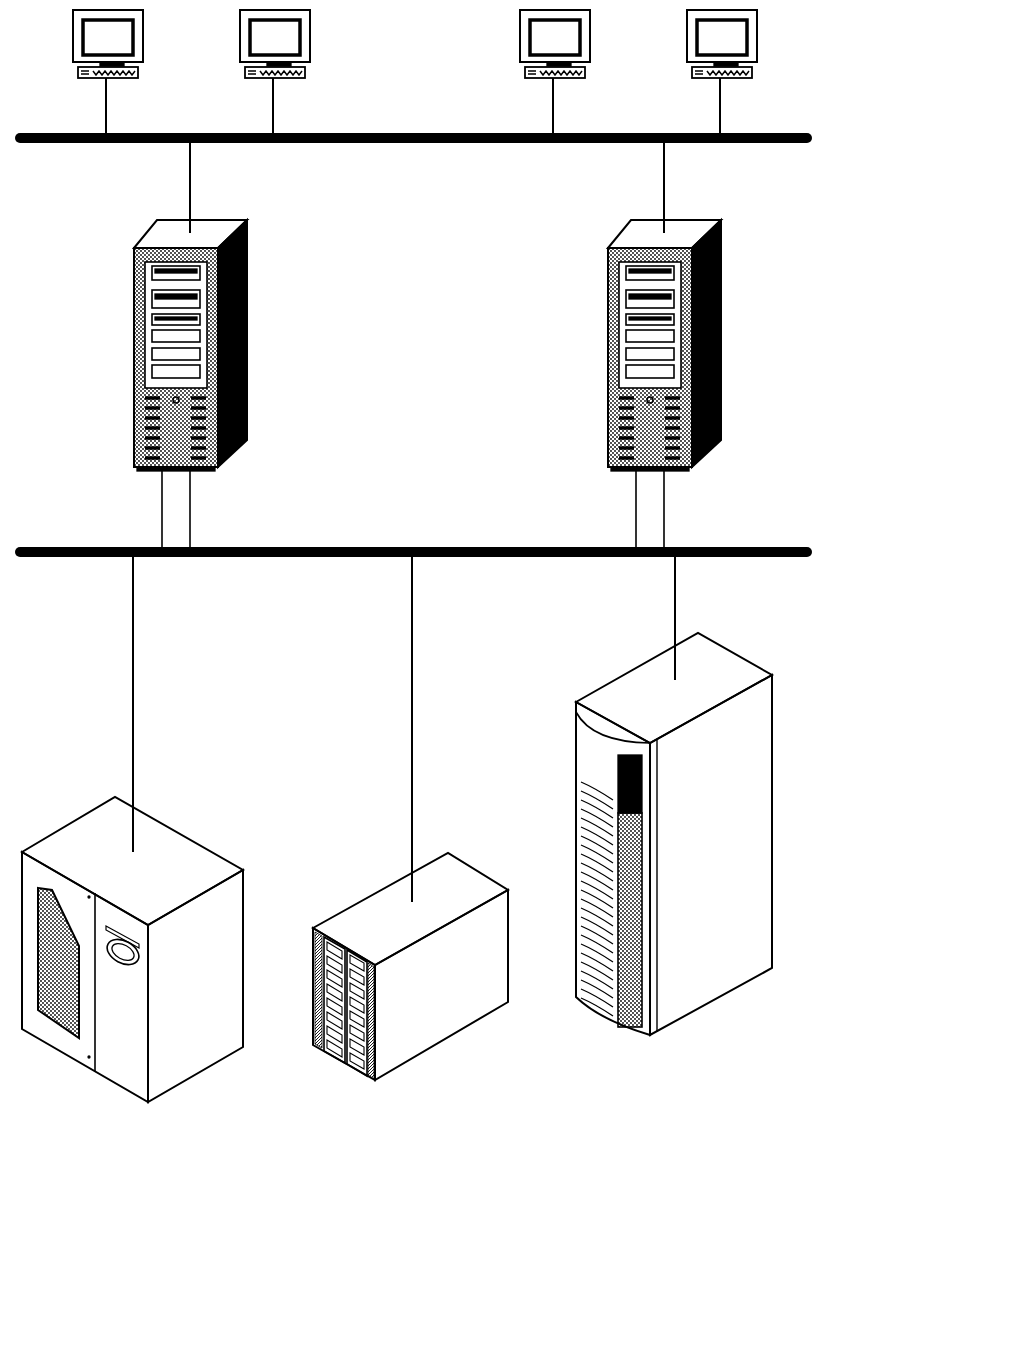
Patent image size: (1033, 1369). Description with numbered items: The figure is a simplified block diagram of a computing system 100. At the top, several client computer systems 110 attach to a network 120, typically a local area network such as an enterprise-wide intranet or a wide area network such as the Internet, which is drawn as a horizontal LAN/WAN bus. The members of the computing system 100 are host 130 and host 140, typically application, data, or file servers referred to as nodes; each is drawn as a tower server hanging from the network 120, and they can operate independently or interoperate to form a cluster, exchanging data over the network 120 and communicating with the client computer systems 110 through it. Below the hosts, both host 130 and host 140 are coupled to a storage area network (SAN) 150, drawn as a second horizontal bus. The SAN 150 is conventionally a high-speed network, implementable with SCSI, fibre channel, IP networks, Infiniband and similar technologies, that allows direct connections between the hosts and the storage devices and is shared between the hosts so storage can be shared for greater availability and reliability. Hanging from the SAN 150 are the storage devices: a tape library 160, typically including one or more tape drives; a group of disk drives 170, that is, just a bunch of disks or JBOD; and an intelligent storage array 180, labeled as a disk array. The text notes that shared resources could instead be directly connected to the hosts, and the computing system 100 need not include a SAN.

The computing system 100 is at (670, 1248).
The client computer systems 110 is at (757, 40).
The network 120 is at (770, 144).
The host 130 is at (134, 345).
The host 140 is at (608, 345).
The storage area network (SAN) 150 is at (723, 547).
The tape library 160 is at (172, 848).
The group of disk drives 170 is at (450, 878).
The intelligent storage array 180 is at (773, 848).